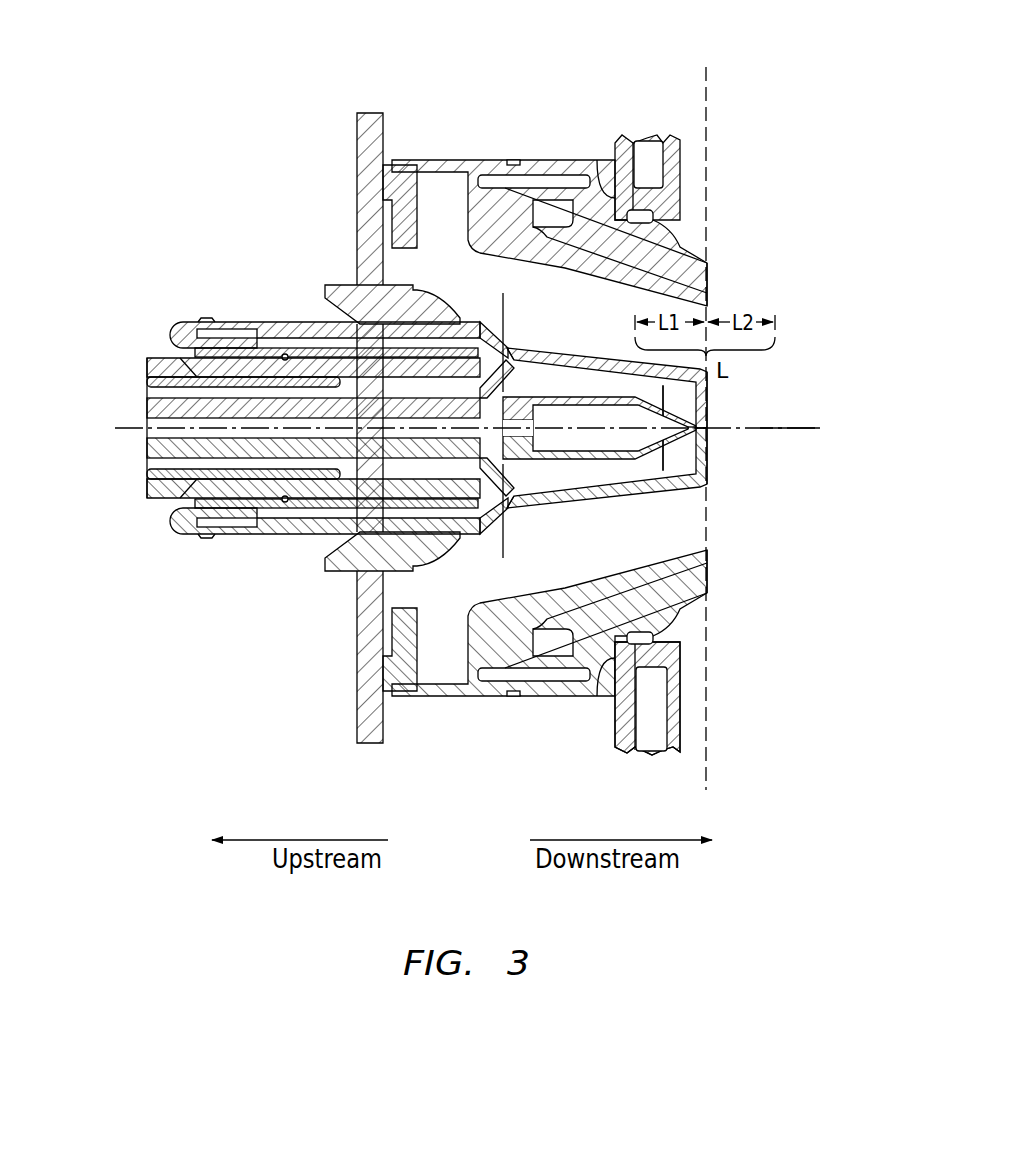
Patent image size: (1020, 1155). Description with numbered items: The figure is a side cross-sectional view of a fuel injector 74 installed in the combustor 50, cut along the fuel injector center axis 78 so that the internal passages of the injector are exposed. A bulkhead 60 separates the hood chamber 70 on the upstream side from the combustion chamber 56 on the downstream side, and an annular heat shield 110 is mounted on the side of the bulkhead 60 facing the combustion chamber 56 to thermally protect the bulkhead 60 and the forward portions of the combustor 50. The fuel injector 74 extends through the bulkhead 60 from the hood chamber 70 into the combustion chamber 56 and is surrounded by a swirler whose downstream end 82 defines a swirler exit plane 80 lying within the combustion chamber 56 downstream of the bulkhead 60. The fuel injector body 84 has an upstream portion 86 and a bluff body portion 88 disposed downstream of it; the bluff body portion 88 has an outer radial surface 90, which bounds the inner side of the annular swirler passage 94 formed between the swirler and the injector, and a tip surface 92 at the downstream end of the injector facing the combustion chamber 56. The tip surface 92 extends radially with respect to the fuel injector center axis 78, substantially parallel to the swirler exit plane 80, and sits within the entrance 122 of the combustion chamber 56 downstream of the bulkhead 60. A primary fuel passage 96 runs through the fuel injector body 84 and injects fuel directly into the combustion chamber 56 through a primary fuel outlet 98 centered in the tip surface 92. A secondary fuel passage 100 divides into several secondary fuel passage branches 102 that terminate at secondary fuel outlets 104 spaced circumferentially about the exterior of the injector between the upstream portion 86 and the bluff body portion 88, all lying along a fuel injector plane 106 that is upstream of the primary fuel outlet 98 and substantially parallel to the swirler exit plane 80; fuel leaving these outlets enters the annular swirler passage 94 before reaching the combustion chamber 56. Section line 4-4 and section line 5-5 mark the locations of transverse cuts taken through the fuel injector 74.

The combustor 50 is at (774, 96).
The combustion chamber 56 is at (874, 410).
The bulkhead 60 is at (600, 166).
The hood chamber 70 is at (78, 340).
The fuel injector 74 is at (205, 580).
The fuel injector center axis 78 is at (815, 430).
The swirler exit plane 80 is at (698, 200).
The downstream end 82 is at (707, 555).
The fuel injector body 84 is at (233, 322).
The upstream portion 86 is at (276, 312).
The bluff body portion 88 is at (668, 517).
The outer radial surface 90 is at (633, 373).
The tip surface 92 is at (712, 390).
The annular swirler passage 94 is at (693, 257).
The primary fuel passage 96 is at (610, 440).
The primary fuel outlet 98 is at (688, 434).
The secondary fuel passage 100 is at (145, 389).
The secondary fuel passage branches 102 is at (477, 330).
The secondary fuel outlets 104 is at (513, 340).
The fuel injector plane 106 is at (330, 343).
The annular heat shield 110 is at (680, 160).
The entrance 122 is at (712, 310).
The section line 4- 4 is at (708, 278).
The section line 5- 5 is at (512, 293).